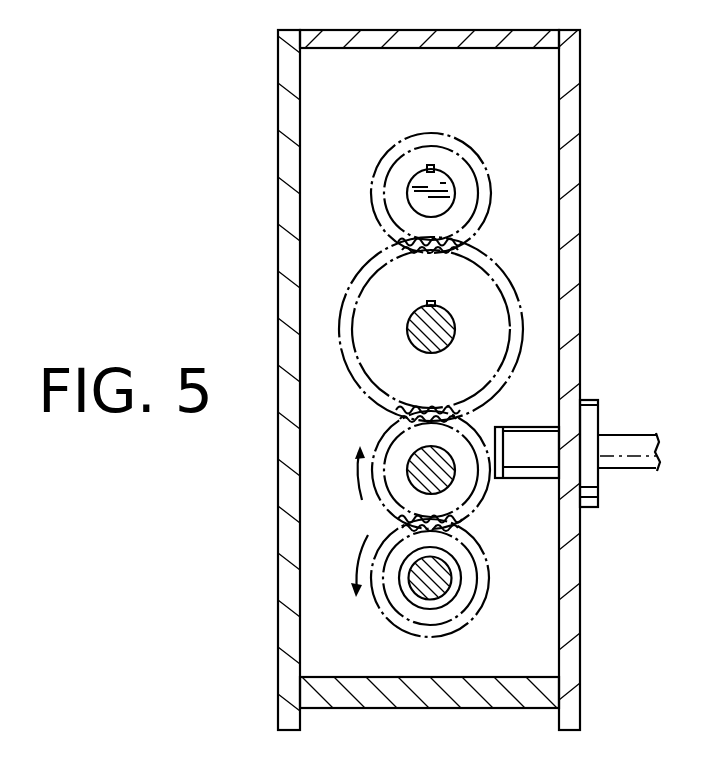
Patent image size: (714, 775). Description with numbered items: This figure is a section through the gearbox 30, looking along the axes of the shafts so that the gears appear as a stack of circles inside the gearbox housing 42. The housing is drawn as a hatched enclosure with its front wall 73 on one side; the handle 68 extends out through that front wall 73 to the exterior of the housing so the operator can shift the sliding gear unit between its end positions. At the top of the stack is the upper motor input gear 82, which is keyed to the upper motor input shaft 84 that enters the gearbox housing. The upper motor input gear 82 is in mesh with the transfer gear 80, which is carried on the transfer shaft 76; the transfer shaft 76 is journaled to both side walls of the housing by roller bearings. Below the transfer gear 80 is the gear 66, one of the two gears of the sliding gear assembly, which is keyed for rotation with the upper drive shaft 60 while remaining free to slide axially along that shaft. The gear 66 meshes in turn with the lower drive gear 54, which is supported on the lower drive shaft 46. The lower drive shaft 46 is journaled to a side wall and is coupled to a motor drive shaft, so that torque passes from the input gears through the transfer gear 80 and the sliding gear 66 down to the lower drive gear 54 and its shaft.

The gearbox 30 is at (260, 280).
The gearbox housing 42 is at (278, 502).
The front wall 73 is at (583, 598).
The upper motor input gear 82 is at (491, 187).
The upper motor input shaft 84 is at (444, 185).
The transfer gear 80 is at (520, 307).
The transfer shaft 76 is at (455, 337).
The gear 66 is at (395, 506).
The upper drive shaft 60 is at (413, 452).
The lower drive gear 54 is at (487, 597).
The lower drive shaft 46 is at (415, 593).
The handle 68 is at (637, 462).